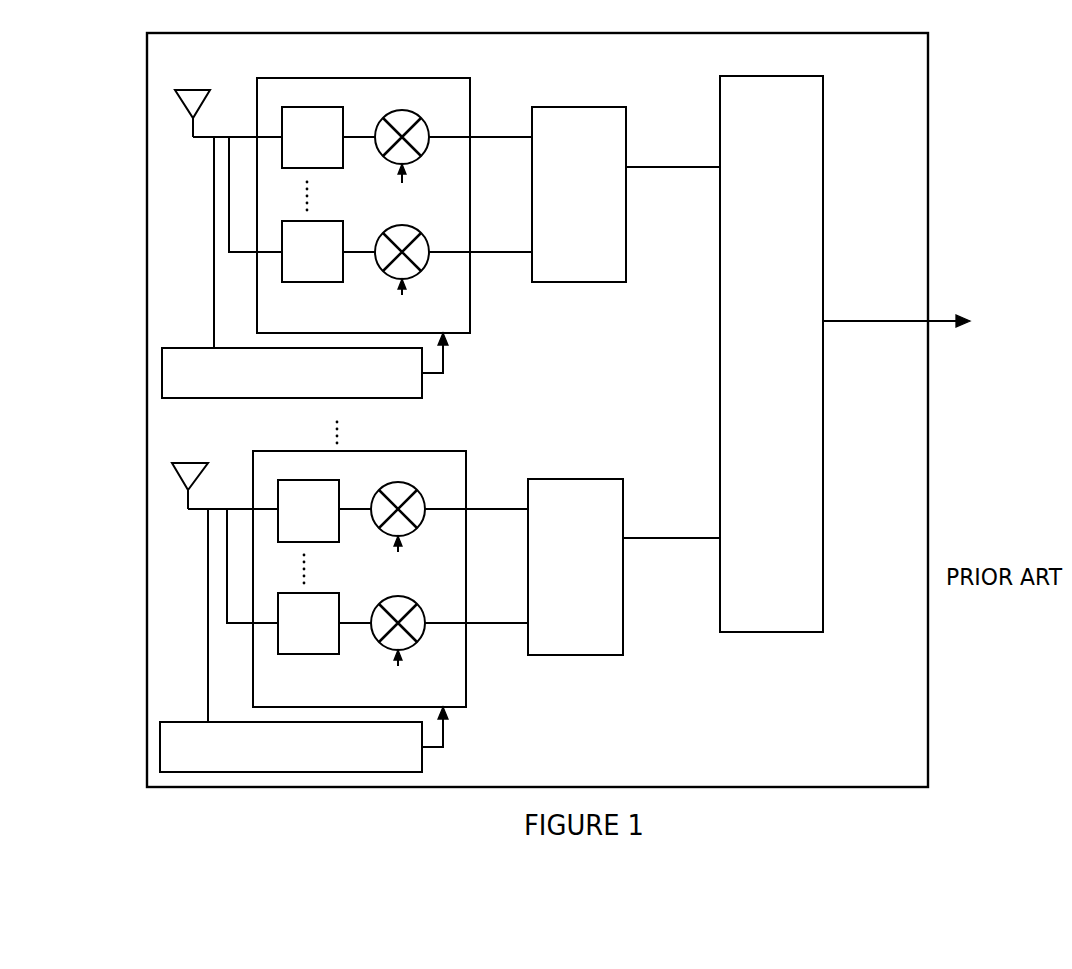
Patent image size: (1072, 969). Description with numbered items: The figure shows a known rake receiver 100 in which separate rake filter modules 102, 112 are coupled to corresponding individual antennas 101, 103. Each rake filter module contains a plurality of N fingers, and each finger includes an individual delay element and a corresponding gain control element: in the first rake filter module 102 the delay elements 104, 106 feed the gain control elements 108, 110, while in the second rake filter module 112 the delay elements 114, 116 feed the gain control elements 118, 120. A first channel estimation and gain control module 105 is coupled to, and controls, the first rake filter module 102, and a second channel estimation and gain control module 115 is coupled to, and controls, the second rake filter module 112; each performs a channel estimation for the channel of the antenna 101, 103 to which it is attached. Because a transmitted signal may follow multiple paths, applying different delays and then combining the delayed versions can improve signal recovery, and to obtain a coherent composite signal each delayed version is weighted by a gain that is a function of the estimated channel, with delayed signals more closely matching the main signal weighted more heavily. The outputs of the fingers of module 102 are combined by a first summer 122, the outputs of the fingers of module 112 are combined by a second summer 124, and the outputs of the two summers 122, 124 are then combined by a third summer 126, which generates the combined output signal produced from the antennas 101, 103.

The rake receiver 100 is at (147, 28).
The antenna 101 is at (208, 90).
The rake filter module 102 is at (435, 78).
The antenna 103 is at (205, 463).
The delay element 104 is at (343, 122).
The channel estimation and gain control module 105 is at (173, 347).
The delay element 106 is at (331, 221).
The gain control element 108 is at (421, 150).
The gain control element 110 is at (420, 270).
The rake filter module 112 is at (422, 450).
The delay element 114 is at (334, 480).
The channel estimation and gain control module 115 is at (177, 720).
The delay element 116 is at (330, 593).
The gain control element 118 is at (418, 522).
The gain control element 120 is at (420, 630).
The first summer 122 is at (603, 107).
The second summer 124 is at (602, 479).
The third summer 126 is at (825, 167).